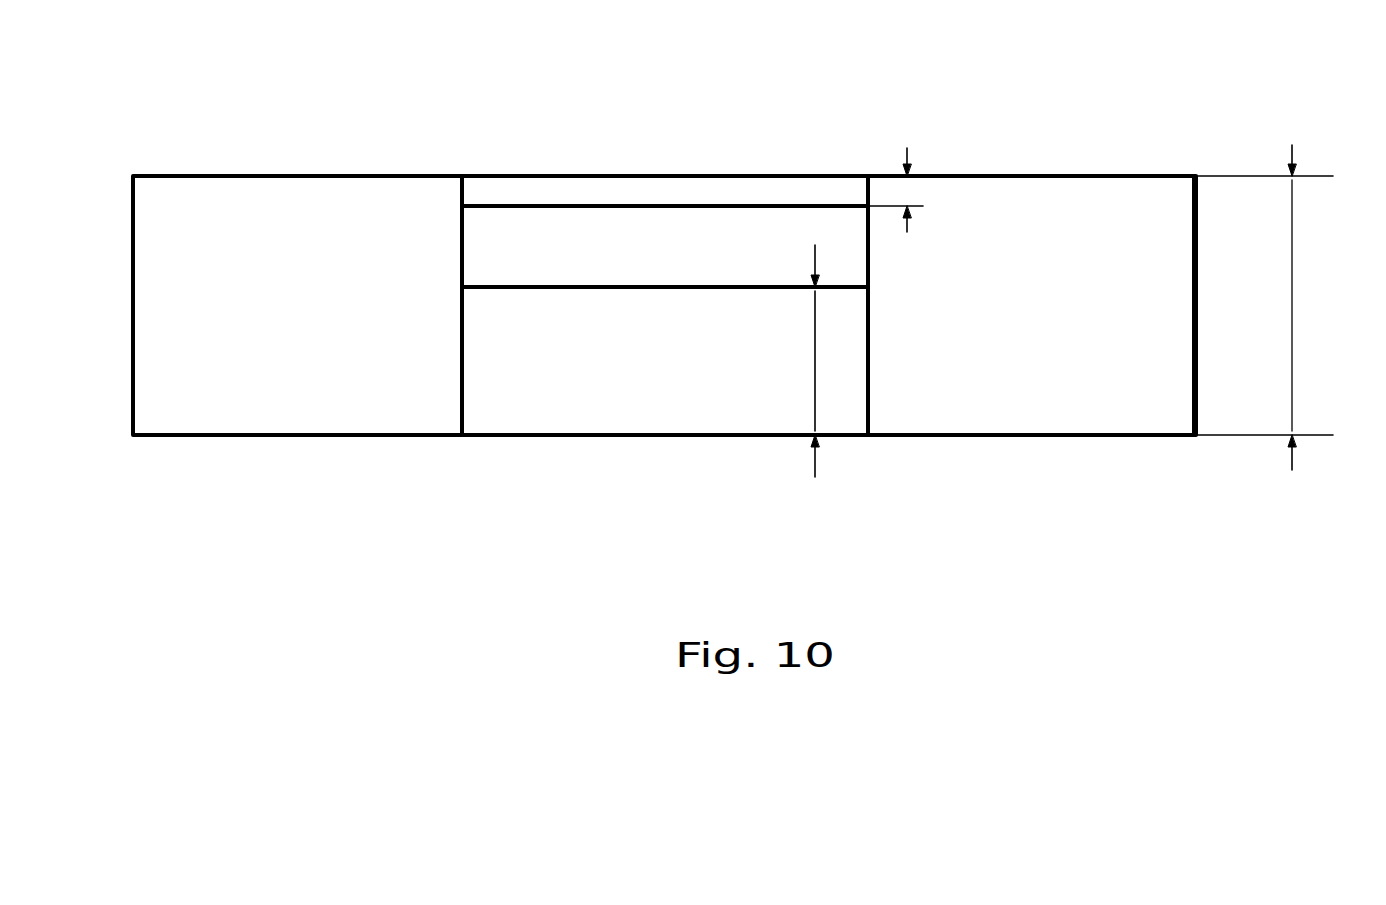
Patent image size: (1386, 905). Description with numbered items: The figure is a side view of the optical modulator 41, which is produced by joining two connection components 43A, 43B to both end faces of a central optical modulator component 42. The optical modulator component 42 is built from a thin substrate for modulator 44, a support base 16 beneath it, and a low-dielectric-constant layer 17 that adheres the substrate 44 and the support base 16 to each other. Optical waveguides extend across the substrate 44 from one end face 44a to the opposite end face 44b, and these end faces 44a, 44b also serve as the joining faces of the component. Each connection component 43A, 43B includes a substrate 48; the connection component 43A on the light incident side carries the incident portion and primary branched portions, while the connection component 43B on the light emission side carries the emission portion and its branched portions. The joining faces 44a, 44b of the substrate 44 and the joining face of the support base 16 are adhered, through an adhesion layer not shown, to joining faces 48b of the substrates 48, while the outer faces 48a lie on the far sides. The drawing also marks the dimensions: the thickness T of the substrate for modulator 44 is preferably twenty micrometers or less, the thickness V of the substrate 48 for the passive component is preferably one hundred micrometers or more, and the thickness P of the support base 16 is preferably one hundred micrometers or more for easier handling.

The optical modulator 41 is at (1197, 176).
The optical modulator component 42 is at (612, 162).
The connection component 43A is at (268, 175).
The connection component 43B is at (977, 176).
The substrate for modulator 44 is at (552, 188).
The end face 44a is at (458, 190).
The end face 44b is at (875, 190).
The substrate 48 is at (320, 188).
The outer side face 48a is at (133, 361).
The joining face 48b is at (460, 372).
The support base 16 is at (653, 410).
The low-dielectric-constant layer 17 is at (733, 220).
The thickness of the substrate for modulator T is at (913, 187).
The thickness of the support base P is at (817, 393).
The thickness of the substrate for passive component V is at (1292, 305).